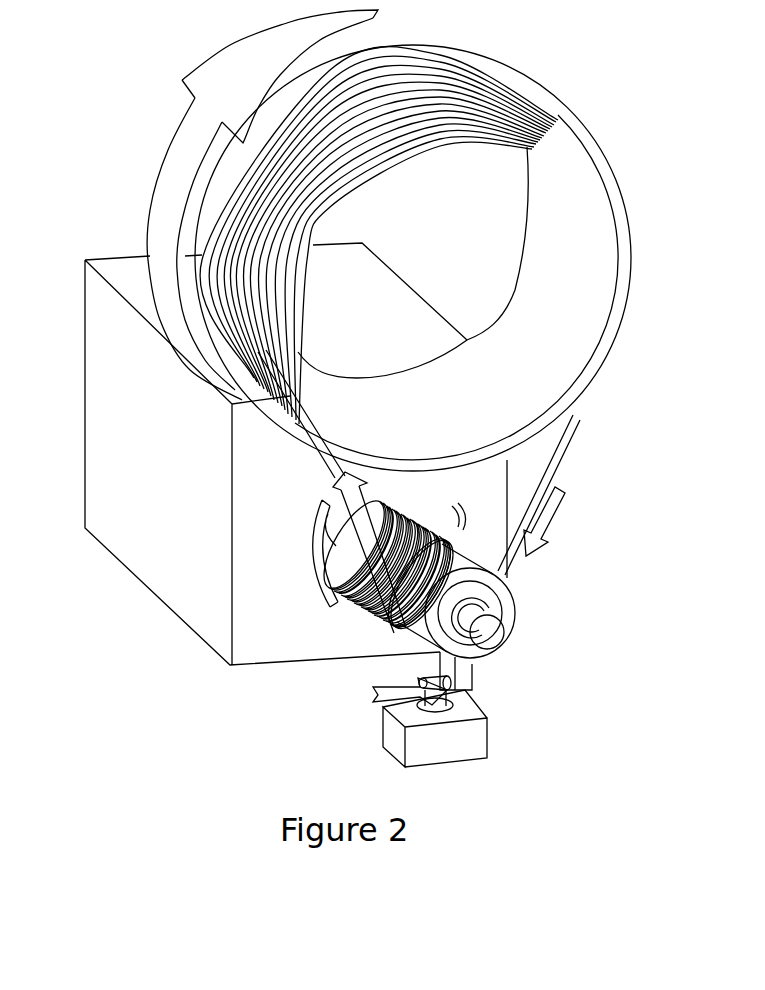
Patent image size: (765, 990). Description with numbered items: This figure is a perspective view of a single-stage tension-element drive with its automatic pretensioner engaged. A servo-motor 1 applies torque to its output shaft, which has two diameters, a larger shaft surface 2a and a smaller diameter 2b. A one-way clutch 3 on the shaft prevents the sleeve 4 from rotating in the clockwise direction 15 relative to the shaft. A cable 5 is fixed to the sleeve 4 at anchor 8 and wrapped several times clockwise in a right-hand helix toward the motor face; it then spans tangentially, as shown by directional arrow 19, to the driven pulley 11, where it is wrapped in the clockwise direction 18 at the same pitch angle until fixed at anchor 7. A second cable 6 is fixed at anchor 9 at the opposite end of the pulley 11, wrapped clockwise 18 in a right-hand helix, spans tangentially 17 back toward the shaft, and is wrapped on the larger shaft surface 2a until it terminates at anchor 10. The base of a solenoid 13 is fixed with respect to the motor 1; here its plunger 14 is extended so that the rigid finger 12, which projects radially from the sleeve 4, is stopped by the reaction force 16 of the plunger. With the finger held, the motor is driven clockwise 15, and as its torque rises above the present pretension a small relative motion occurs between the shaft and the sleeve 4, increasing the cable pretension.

The servo-motor 1 is at (84, 346).
The larger shaft surface 2a is at (330, 497).
The shaft diameter 2b is at (495, 632).
The one-way clutch 3 is at (498, 613).
The sleeve 4 is at (498, 592).
The cable 5 is at (317, 432).
The second cable 6 is at (560, 448).
The anchor 7 is at (458, 65).
The anchor 8 is at (400, 630).
The anchor 9 is at (408, 133).
The anchor 10 is at (427, 502).
The driven pulley 11 is at (373, 53).
The rigid finger 12 is at (463, 675).
The solenoid 13 is at (490, 728).
The plunger 14 is at (418, 682).
The clockwise direction 15 is at (317, 548).
The reaction force 16 is at (435, 690).
The tangential span 17 is at (537, 547).
The clockwise direction 18 is at (226, 77).
The directional arrow 19 is at (348, 485).